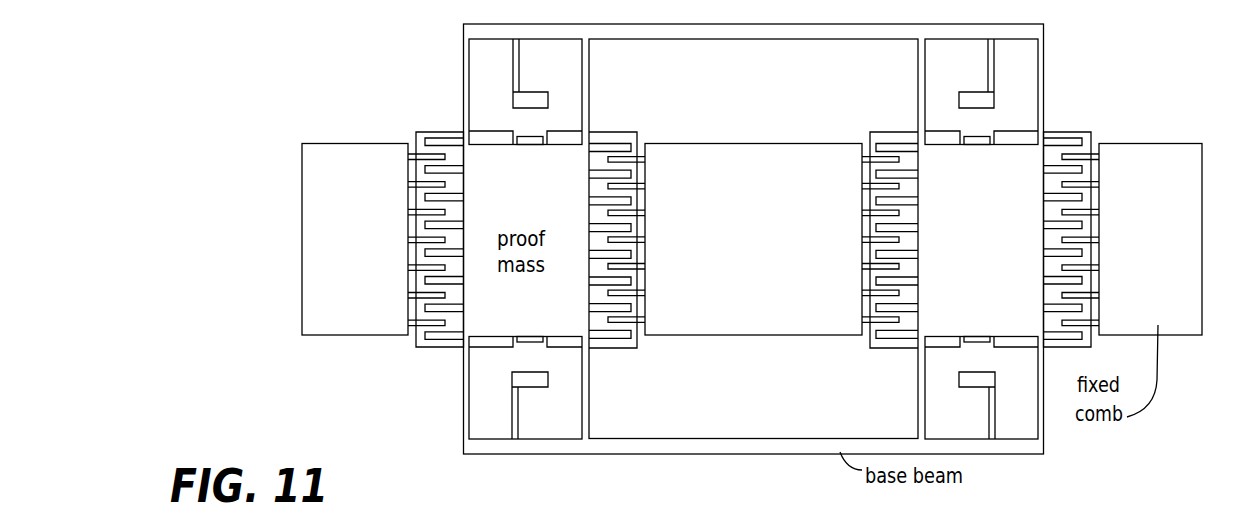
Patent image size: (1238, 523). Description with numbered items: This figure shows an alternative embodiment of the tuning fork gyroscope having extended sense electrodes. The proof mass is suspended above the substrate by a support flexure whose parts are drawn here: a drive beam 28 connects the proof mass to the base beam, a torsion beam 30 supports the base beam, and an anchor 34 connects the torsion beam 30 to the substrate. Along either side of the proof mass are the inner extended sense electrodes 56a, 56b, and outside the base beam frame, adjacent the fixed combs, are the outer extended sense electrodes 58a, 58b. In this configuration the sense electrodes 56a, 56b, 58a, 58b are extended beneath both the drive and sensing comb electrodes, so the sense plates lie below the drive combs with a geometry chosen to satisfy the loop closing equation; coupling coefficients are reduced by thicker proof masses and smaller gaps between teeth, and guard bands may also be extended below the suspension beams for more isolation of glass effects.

The drive beam 28 is at (589, 87).
The torsion beam 30 is at (518, 75).
The anchor 34 is at (533, 382).
The inner extended sense electrode 56a is at (610, 348).
The inner extended sense electrode 56b is at (894, 131).
The outer extended sense electrode 58a is at (437, 349).
The outer extended sense electrode 58b is at (1060, 131).